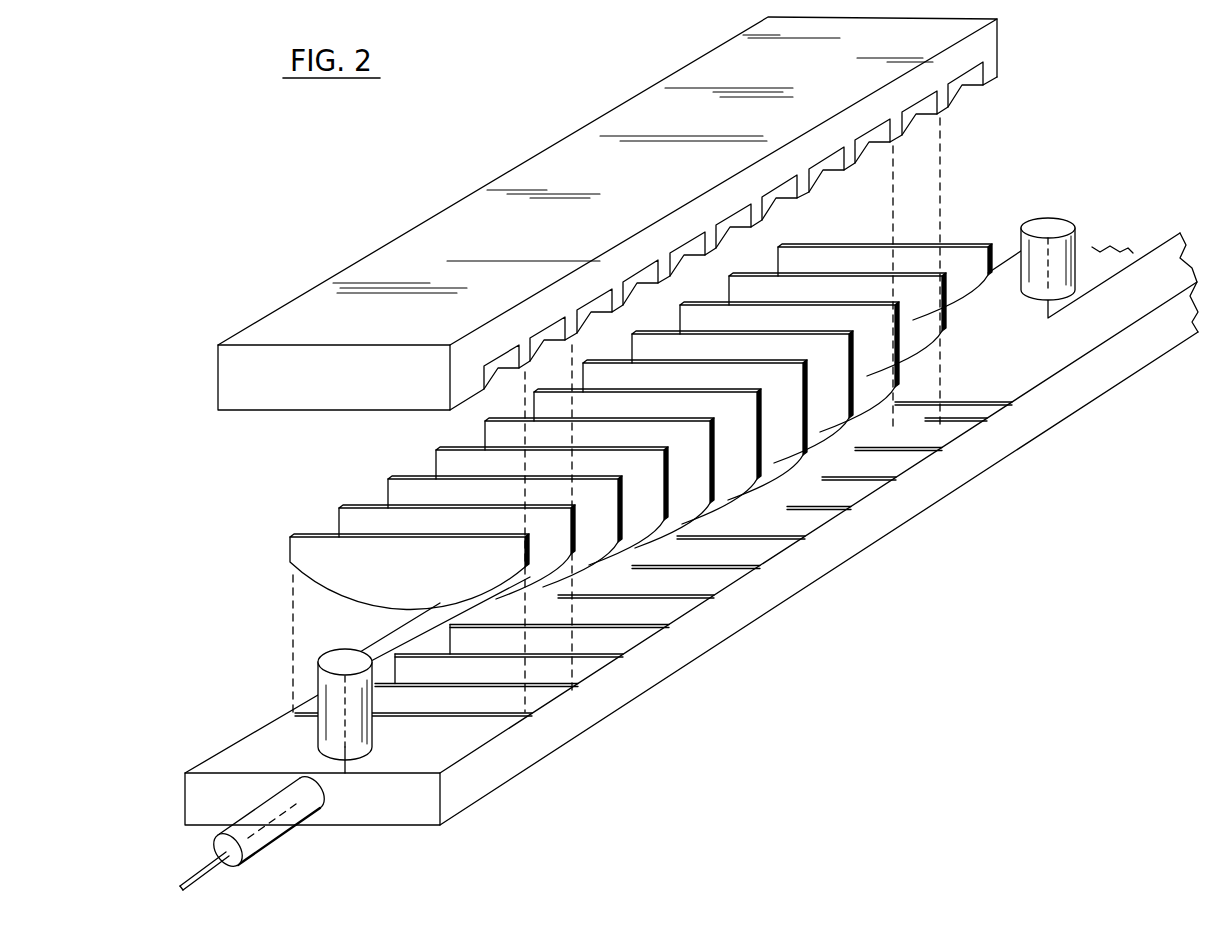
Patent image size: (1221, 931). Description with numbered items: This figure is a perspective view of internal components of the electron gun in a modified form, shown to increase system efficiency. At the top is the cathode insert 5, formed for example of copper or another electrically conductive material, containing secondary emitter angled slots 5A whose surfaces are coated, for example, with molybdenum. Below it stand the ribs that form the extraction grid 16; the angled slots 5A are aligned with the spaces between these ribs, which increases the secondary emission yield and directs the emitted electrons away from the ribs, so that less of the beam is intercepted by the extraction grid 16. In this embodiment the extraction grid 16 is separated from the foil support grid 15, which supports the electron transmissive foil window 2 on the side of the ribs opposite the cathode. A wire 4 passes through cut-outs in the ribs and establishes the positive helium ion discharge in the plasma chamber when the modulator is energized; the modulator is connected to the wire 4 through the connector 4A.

The electron transmissive foil window 2 is at (712, 648).
The wire 4 is at (318, 656).
The connector 4A is at (252, 806).
The cathode insert 5 is at (703, 60).
The secondary emitter angled slots 5A is at (1000, 76).
The foil support grid 15 is at (822, 512).
The extraction grid 16 is at (372, 497).